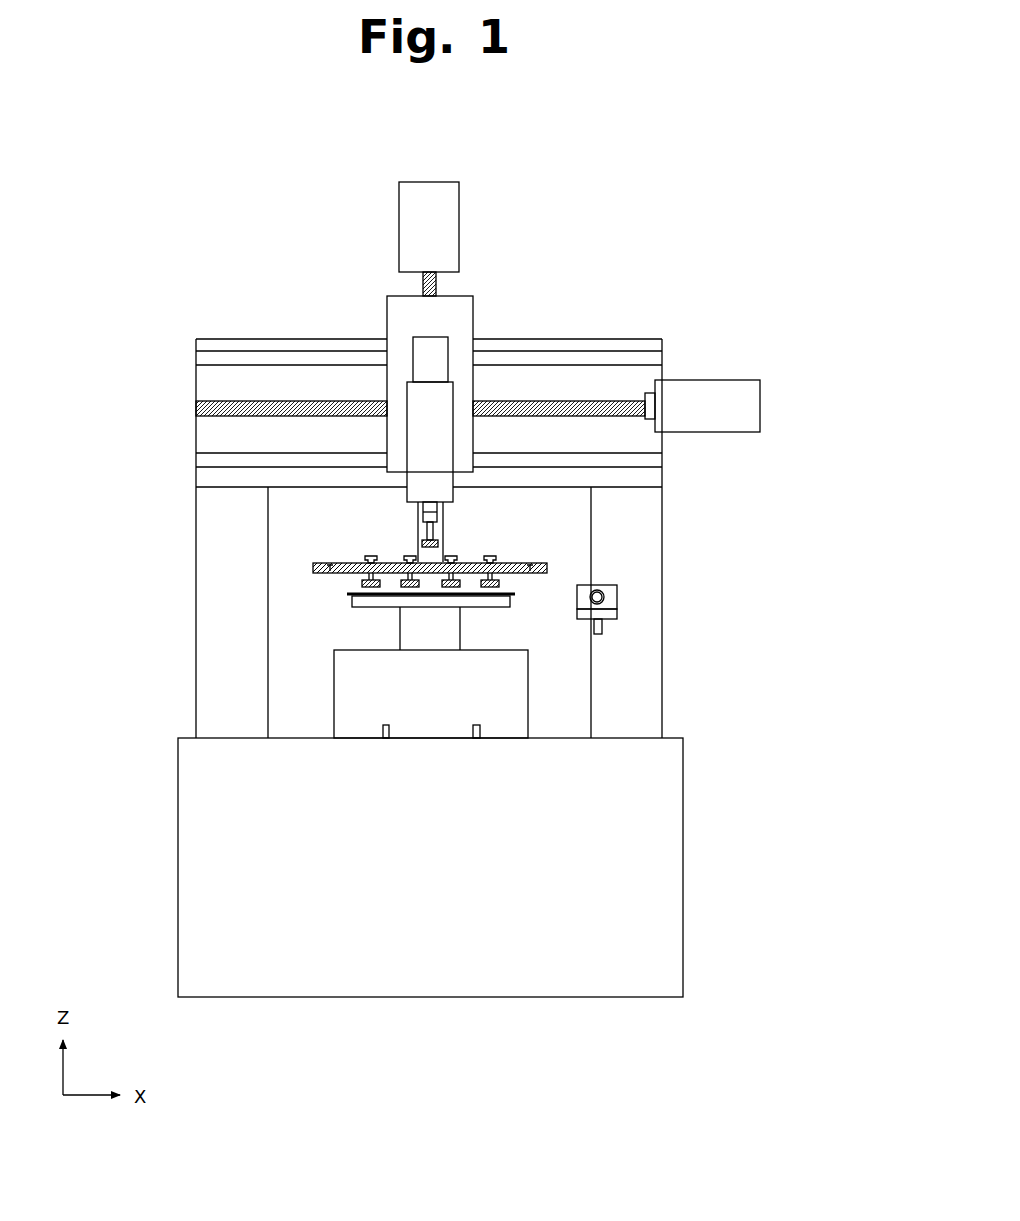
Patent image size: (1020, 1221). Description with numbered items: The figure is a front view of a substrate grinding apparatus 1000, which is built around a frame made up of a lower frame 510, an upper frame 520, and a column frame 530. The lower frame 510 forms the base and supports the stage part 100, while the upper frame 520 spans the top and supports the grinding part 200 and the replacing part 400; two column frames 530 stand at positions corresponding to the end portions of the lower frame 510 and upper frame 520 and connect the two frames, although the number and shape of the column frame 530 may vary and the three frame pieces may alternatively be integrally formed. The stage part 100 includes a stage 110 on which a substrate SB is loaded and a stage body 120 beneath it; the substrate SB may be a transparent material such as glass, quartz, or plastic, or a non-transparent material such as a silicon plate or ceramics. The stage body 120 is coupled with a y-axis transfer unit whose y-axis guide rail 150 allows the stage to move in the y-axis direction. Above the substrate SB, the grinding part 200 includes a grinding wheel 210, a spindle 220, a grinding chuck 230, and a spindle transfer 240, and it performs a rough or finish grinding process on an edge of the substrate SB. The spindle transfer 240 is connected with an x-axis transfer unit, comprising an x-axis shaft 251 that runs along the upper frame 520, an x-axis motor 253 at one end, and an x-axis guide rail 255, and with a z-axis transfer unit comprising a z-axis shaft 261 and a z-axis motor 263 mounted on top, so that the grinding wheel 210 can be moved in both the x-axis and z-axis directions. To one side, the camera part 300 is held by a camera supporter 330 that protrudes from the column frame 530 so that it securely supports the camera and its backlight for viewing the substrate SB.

The substrate grinding apparatus 1000 is at (616, 198).
The stage part 100 is at (110, 625).
The stage 110 is at (352, 600).
The stage body 120 is at (347, 672).
The y-axis guide rail 150 is at (386, 740).
The grinding part 200 is at (110, 445).
The grinding wheel 210 is at (418, 541).
The spindle 220 is at (420, 483).
The grinding chuck 230 is at (417, 505).
The spindle transfer 240 is at (397, 436).
The x-axis shaft 251 is at (598, 400).
The x-axis motor 253 is at (752, 403).
The x-axis guide rail 255 is at (655, 350).
The z-axis shaft 261 is at (436, 283).
The z-axis motor 263 is at (450, 222).
The camera part 300 is at (630, 591).
The camera supporter 330 is at (617, 610).
The replacing part 400 is at (542, 558).
The lower frame 510 is at (190, 856).
The upper frame 520 is at (205, 343).
The column frame 530 is at (203, 711).
The substrate SB is at (347, 593).